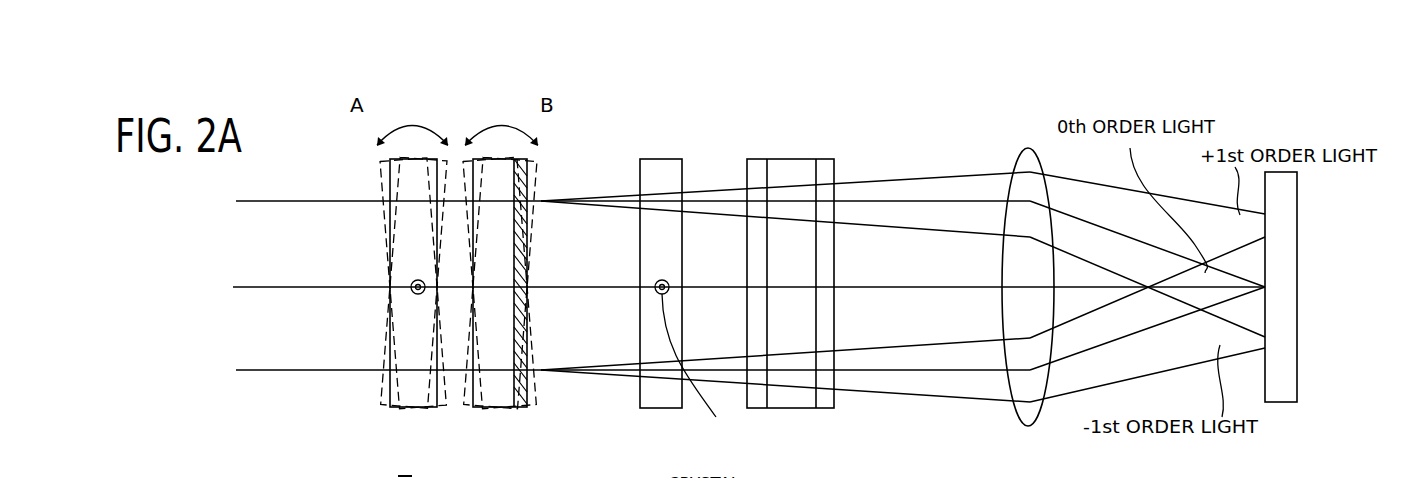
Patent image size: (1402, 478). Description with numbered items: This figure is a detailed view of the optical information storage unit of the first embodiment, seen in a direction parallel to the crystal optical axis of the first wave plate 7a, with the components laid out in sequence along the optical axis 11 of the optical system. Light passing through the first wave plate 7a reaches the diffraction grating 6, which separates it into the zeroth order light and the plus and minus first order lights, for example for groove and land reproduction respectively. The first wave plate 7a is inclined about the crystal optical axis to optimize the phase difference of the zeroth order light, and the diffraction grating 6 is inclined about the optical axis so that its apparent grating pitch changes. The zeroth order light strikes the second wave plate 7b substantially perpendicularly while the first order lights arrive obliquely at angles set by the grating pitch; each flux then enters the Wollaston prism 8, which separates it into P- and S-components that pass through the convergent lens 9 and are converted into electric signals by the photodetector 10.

The optical axis 11 is at (298, 287).
The first wave plate 7a is at (420, 398).
The diffraction grating 6 is at (502, 400).
The second wave plate 7b is at (653, 400).
The Wollaston prism 8 is at (805, 403).
The convergent lens 9 is at (1023, 420).
The photodetector 10 is at (1282, 397).